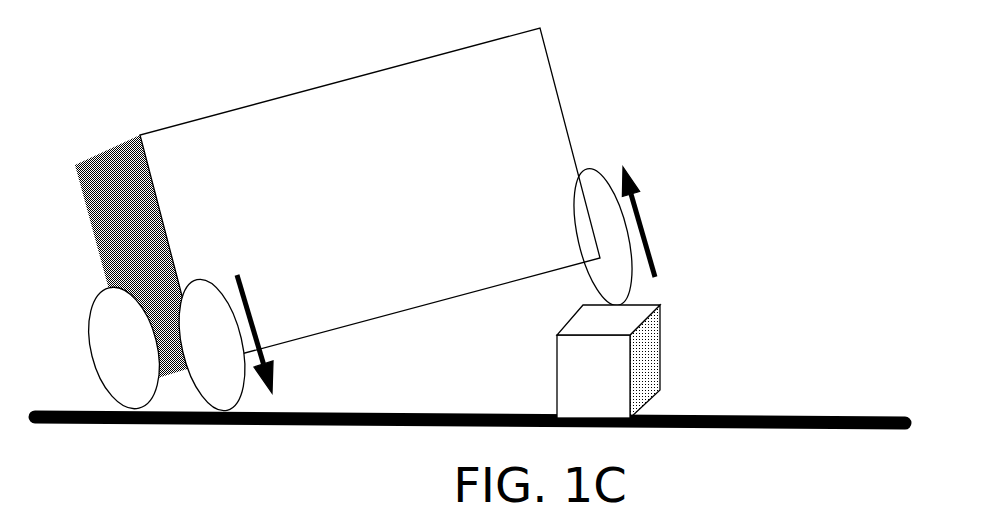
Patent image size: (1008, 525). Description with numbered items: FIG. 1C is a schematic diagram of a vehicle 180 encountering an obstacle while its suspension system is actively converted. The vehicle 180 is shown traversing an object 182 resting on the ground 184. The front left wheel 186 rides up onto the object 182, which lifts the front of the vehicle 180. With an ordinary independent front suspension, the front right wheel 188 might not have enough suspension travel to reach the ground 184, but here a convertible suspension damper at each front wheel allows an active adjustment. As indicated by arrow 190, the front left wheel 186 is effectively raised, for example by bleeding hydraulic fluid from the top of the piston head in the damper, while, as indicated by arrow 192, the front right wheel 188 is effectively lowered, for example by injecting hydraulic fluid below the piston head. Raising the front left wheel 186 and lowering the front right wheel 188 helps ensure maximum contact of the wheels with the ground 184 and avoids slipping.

The vehicle 180 is at (337, 206).
The object 182 is at (658, 361).
The ground 184 is at (470, 385).
The front left wheel 186 is at (637, 189).
The front right wheel 188 is at (166, 373).
The arrow 190 is at (687, 222).
The arrow 192 is at (304, 316).